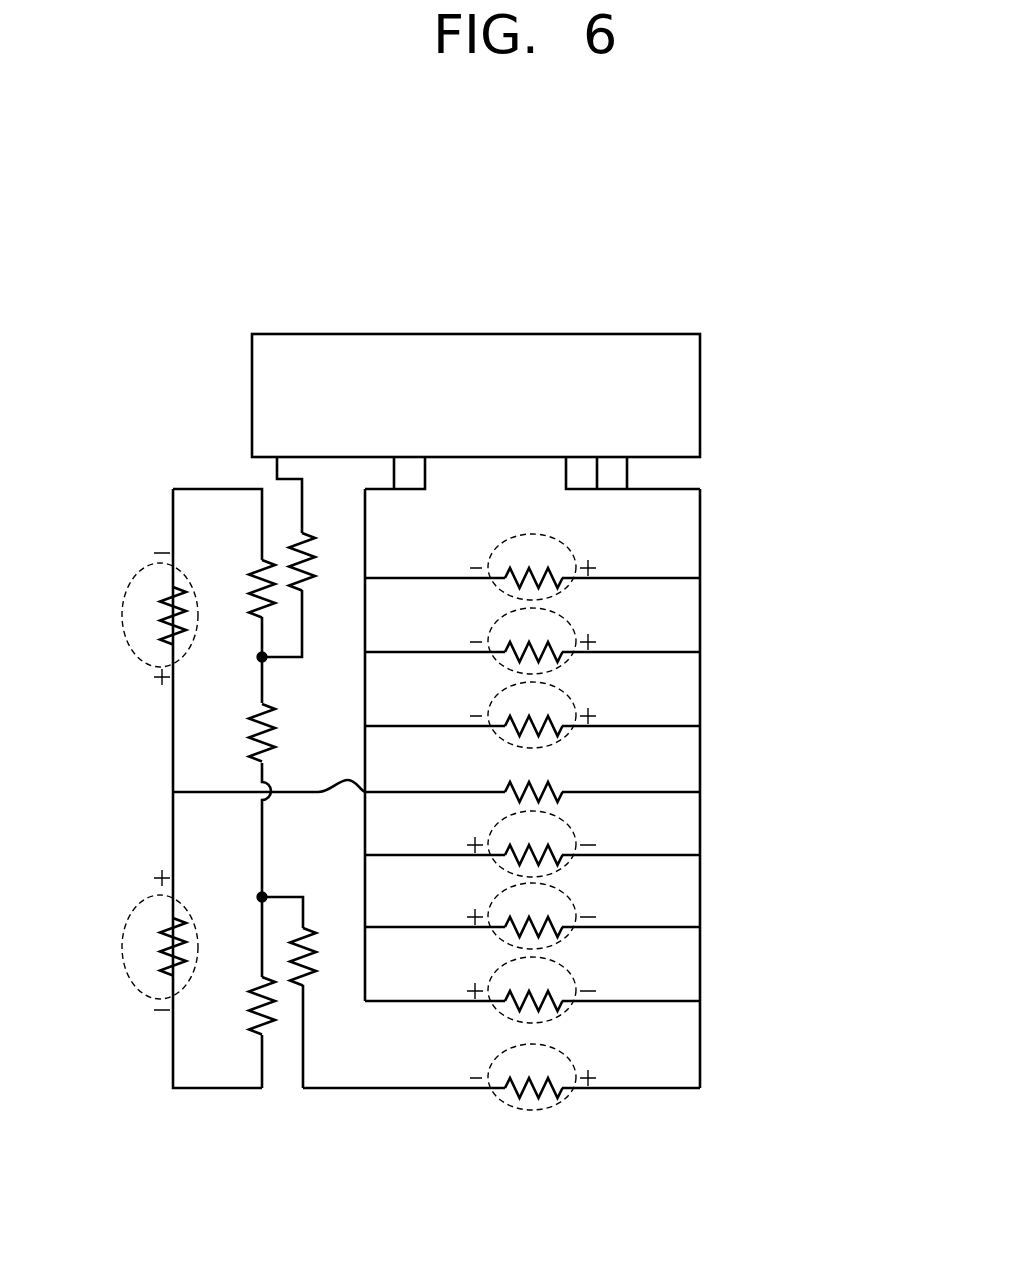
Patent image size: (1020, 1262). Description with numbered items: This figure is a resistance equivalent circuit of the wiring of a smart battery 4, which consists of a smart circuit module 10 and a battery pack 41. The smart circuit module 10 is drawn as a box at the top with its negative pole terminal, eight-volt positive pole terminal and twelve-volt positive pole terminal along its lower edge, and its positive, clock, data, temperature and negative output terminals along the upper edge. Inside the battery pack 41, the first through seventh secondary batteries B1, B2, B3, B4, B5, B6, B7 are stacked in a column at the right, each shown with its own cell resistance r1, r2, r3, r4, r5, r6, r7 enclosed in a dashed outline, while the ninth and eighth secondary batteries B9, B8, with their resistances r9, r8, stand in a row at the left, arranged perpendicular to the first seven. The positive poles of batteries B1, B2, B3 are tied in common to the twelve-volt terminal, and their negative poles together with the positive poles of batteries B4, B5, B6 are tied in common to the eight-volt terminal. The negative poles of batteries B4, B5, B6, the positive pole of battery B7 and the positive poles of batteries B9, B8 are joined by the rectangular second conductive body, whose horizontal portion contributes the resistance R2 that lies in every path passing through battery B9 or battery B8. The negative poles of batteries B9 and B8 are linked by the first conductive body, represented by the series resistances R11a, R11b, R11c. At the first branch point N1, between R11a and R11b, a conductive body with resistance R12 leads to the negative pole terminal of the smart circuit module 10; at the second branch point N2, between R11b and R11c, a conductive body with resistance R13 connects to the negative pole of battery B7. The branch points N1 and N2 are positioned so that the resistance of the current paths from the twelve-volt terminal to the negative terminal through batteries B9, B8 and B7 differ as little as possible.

The smart battery 4 is at (723, 302).
The smart circuit module 10 is at (700, 395).
The battery pack 41 is at (758, 743).
The first secondary battery B1 is at (573, 561).
The second secondary battery B2 is at (573, 635).
The third secondary battery B3 is at (573, 709).
The fourth secondary battery B4 is at (573, 837).
The fifth secondary battery B5 is at (573, 909).
The sixth secondary battery B6 is at (573, 983).
The seventh secondary battery B7 is at (573, 1070).
The eighth secondary battery B8 is at (143, 900).
The ninth secondary battery B9 is at (143, 570).
The internal resistance of battery cell B1 r1 is at (532, 567).
The internal resistance of battery cell B2 r2 is at (532, 641).
The internal resistance of battery cell B3 r3 is at (532, 715).
The internal resistance of battery cell B4 r4 is at (532, 844).
The internal resistance of battery cell B5 r5 is at (532, 916).
The internal resistance of battery cell B6 r6 is at (532, 990).
The internal resistance of battery cell B7 r7 is at (532, 1077).
The internal resistance of battery cell B8 r8 is at (160, 947).
The internal resistance of battery cell B9 r9 is at (160, 615).
The internal resistance R11a is at (224, 573).
The internal resistance R11b is at (234, 777).
The internal resistance R11c is at (234, 992).
The internal resistance R12 is at (313, 557).
The internal resistance R13 is at (313, 992).
The internal resistance R2 is at (436, 776).
The first branch point N1 is at (281, 669).
The second branch point N2 is at (281, 882).